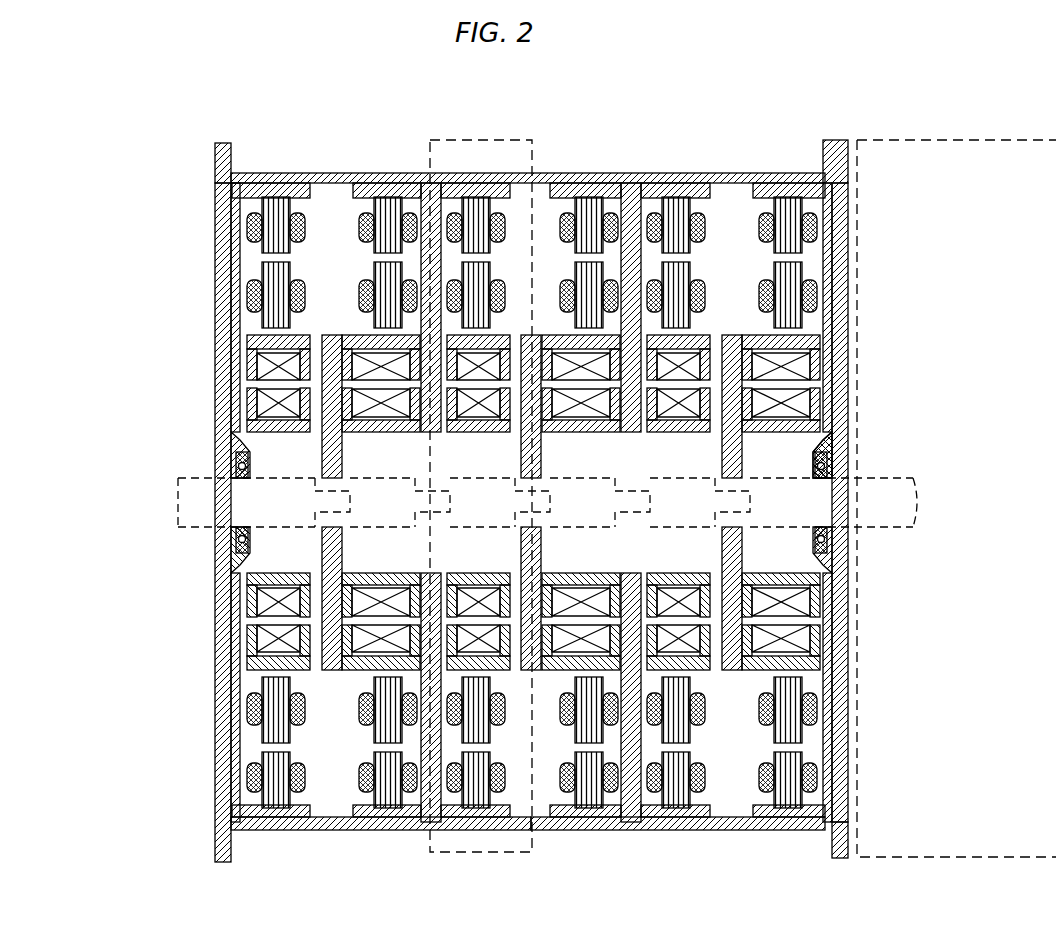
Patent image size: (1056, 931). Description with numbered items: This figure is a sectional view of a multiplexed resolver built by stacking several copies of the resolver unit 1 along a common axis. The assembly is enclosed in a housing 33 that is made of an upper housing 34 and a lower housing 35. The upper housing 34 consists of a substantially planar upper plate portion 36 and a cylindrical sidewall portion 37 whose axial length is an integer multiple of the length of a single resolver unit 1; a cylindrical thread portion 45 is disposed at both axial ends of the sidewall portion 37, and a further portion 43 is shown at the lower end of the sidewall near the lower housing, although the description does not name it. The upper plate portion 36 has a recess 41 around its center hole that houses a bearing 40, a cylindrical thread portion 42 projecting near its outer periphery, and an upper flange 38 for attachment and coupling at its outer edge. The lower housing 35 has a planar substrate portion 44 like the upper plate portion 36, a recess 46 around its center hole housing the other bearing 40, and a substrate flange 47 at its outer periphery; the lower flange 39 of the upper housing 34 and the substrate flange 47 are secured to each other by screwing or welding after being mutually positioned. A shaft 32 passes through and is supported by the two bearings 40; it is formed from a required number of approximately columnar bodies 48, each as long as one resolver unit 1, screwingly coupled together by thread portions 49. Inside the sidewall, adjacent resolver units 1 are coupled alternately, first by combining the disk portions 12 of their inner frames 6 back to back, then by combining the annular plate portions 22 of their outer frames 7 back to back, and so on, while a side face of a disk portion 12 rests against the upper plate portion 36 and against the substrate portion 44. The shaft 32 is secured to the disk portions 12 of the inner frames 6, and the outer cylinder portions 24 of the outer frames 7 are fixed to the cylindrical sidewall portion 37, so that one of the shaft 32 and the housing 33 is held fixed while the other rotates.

The resolver unit 1 is at (476, 138).
The inner frame 6 is at (355, 335).
The outer frame 7 is at (420, 258).
The disk portion 12 is at (344, 468).
The annular plate portion 22 is at (235, 257).
The outer cylinder portion 24 is at (360, 199).
The shaft 32 is at (868, 476).
The housing 33 is at (176, 130).
The upper housing 34 is at (155, 240).
The lower housing 35 is at (864, 222).
The upper plate portion 36 is at (213, 315).
The cylindrical sidewall portion 37 is at (578, 175).
The upper flange 38 is at (232, 160).
The lower flange 39 is at (825, 152).
The bearing 40 is at (230, 543).
The recess 41 is at (222, 573).
The cylindrical thread portion 42 is at (238, 170).
The bottom plate 43 is at (817, 829).
The substrate portion 44 is at (848, 372).
The cylindrical thread portion 45 is at (333, 830).
The recess 46 is at (840, 448).
The substrate flange 47 is at (850, 840).
The columnar body 48 is at (390, 515).
The thread portion 49 is at (543, 483).